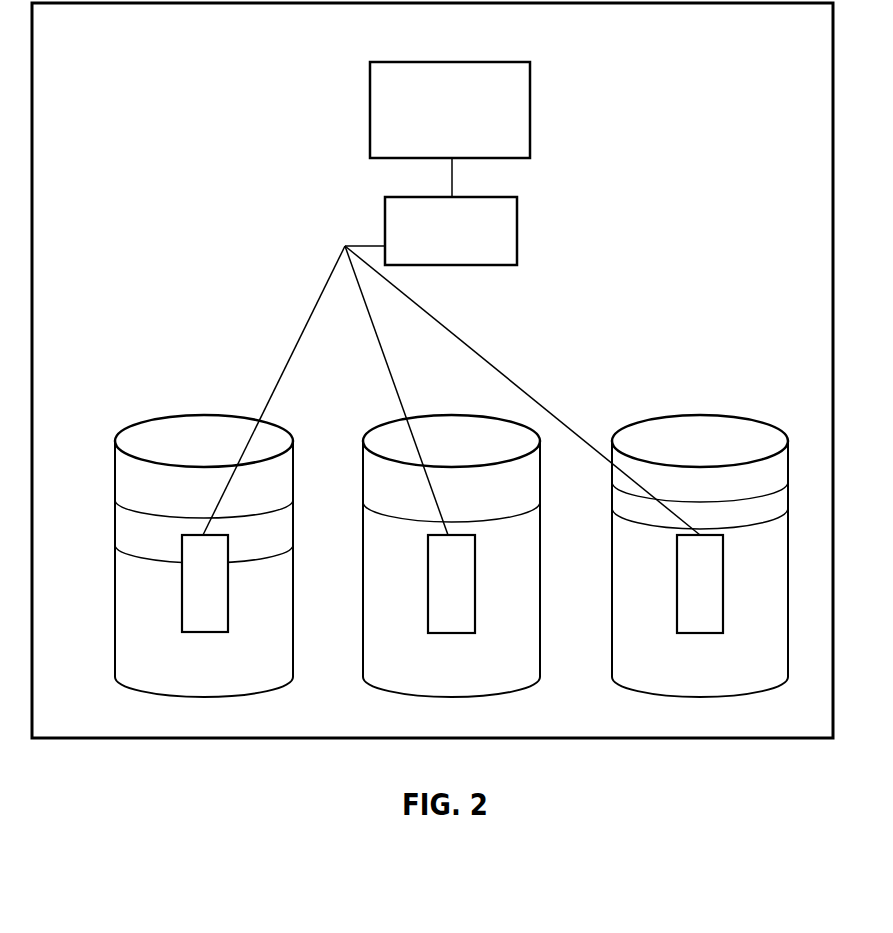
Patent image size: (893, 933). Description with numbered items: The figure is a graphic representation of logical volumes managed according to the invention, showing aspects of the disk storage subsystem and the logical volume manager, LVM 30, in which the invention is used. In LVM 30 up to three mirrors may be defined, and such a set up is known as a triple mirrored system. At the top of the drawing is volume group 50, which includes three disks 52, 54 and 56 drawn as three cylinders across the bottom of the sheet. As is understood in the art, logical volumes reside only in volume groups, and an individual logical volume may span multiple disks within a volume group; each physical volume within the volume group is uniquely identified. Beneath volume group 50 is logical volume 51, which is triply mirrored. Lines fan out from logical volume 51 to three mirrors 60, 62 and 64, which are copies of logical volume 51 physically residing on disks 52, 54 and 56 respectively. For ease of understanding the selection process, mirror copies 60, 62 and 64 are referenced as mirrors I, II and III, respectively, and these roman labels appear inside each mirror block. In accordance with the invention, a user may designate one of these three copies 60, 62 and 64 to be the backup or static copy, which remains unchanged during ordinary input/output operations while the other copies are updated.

The LVM 30 is at (691, 108).
The volume group 50 is at (481, 148).
The logical volume 51 is at (481, 253).
The disk 52 is at (256, 658).
The disk 54 is at (503, 658).
The disk 56 is at (752, 658).
The mirror 60 is at (193, 575).
The mirror 62 is at (439, 575).
The mirror 64 is at (688, 575).